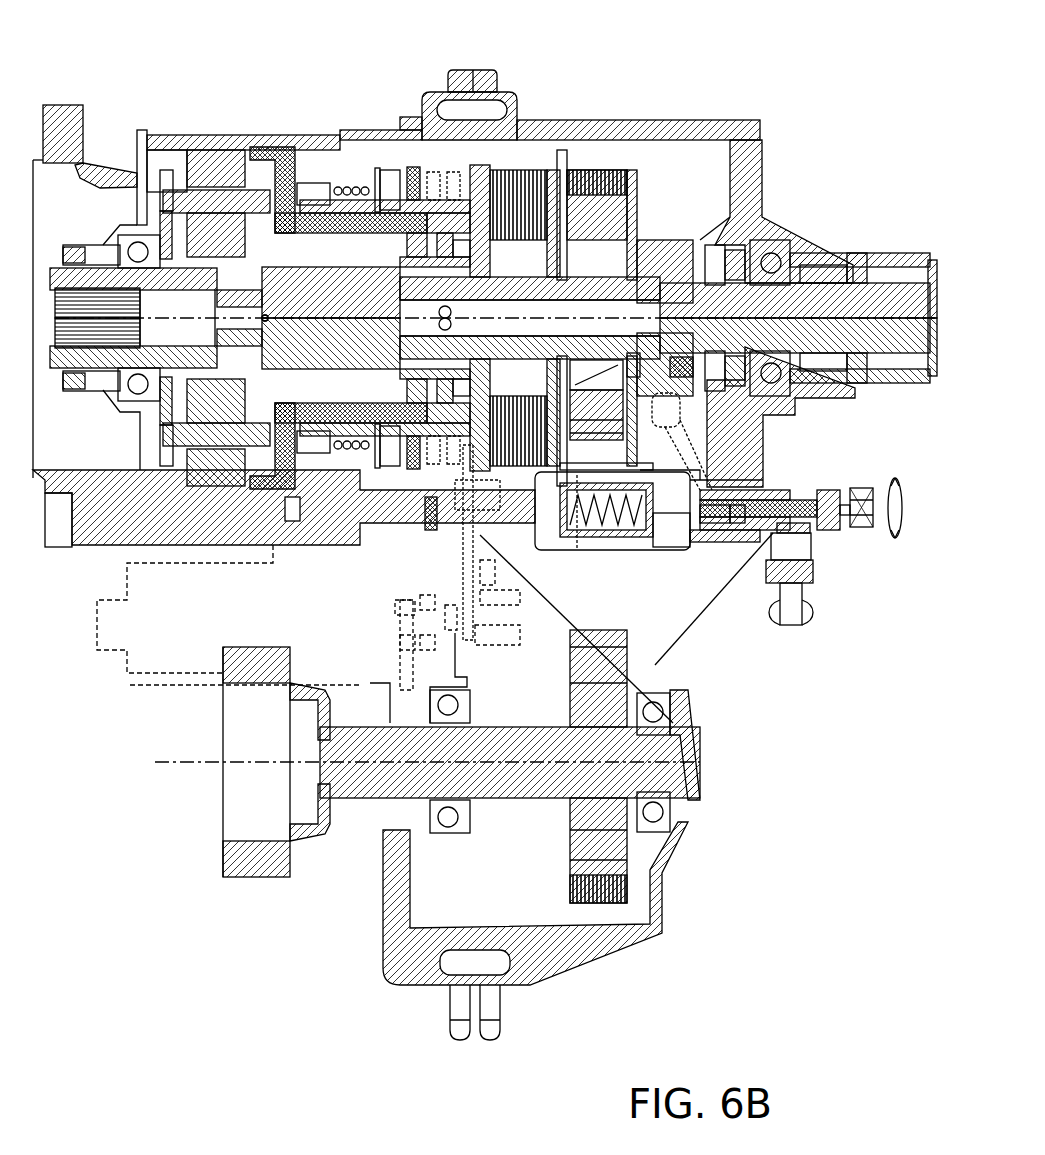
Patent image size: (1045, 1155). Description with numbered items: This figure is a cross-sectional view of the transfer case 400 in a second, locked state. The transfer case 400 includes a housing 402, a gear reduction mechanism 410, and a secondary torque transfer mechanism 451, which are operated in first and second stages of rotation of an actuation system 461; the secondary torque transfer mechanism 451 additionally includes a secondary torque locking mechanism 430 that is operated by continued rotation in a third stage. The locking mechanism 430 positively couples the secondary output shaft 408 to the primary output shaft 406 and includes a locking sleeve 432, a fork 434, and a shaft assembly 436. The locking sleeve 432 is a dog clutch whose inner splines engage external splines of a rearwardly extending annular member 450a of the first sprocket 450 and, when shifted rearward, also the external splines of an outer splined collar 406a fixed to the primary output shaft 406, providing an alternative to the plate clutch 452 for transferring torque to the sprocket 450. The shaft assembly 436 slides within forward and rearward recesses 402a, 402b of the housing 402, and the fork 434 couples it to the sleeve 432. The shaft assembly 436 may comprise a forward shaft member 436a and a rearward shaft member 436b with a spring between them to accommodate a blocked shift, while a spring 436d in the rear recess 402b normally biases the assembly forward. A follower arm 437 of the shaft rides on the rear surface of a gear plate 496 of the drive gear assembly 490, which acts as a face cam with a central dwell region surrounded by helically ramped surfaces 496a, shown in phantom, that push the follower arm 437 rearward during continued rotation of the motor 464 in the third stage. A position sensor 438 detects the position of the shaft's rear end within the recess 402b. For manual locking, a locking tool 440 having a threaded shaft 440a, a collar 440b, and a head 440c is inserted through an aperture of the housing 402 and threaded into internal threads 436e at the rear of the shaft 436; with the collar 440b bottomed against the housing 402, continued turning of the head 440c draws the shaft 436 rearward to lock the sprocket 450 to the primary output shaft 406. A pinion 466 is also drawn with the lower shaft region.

The transfer case 400 is at (707, 67).
The housing 402 is at (752, 130).
The forward recess 402a is at (285, 500).
The rearward recess 402b is at (813, 480).
The primary output shaft 406 is at (833, 262).
The outer splined collar 406a is at (790, 237).
The secondary output shaft 408 is at (400, 575).
The gear reduction mechanism 410 is at (270, 122).
The secondary torque locking mechanism 430 is at (850, 712).
The locking sleeve 432 is at (747, 533).
The fork 434 is at (715, 485).
The shaft assembly 436 is at (700, 497).
The forward shaft member 436a is at (688, 700).
The rearward shaft member 436b is at (712, 503).
The spring 436d is at (812, 532).
The internal threads 436e is at (737, 500).
The follower arm 437 is at (453, 540).
The position sensor 438 is at (812, 548).
The locking tool 440 is at (908, 507).
The threaded shaft 440a is at (770, 497).
The collar 440b is at (845, 533).
The head 440c is at (876, 497).
The first sprocket 450 is at (630, 232).
The annular member 450a is at (745, 225).
The secondary torque transfer mechanism 451 is at (590, 205).
The plate clutch 452 is at (552, 153).
The actuation system 461 is at (384, 155).
The motor 464 is at (400, 445).
The pinion gear 466 is at (450, 625).
The drive gear assembly 490 is at (406, 165).
The gear plate 496 is at (432, 458).
The helically ramped surfaces 496a is at (424, 530).